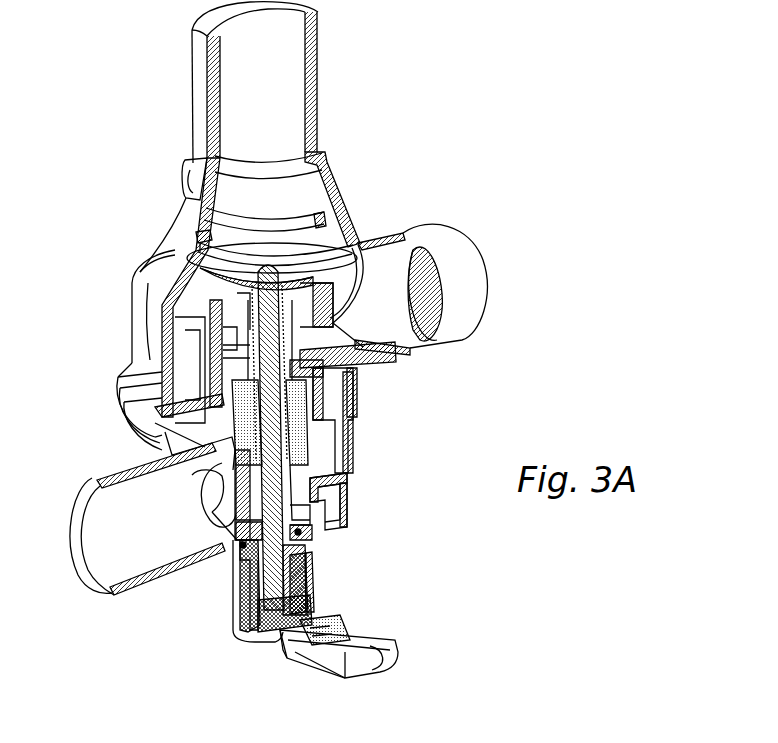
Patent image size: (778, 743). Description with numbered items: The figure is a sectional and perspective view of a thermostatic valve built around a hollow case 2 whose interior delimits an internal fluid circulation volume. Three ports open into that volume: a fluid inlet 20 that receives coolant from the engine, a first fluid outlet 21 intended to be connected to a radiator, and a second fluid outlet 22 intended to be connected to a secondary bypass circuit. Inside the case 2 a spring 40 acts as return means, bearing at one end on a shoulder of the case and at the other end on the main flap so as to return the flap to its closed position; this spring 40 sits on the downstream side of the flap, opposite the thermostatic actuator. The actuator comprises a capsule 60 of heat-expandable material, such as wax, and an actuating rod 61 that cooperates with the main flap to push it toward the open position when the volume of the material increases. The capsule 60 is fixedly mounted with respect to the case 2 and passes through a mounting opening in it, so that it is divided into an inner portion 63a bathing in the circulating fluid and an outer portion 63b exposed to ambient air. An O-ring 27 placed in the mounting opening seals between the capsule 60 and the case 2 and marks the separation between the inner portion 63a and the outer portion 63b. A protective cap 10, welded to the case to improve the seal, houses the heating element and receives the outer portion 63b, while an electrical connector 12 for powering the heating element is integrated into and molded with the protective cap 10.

The first fluid outlet 21 is at (318, 40).
The spring 40 is at (312, 218).
The fluid inlet 20 is at (467, 288).
The case 2 is at (153, 330).
The actuating rod 61 is at (367, 377).
The capsule 60 is at (379, 449).
The inner portion 63a is at (292, 470).
The O-ring 27 is at (300, 530).
The outer portion 63b is at (300, 572).
The protective cap 10 is at (237, 603).
The second fluid outlet 22 is at (138, 587).
The electrical connector 12 is at (318, 655).